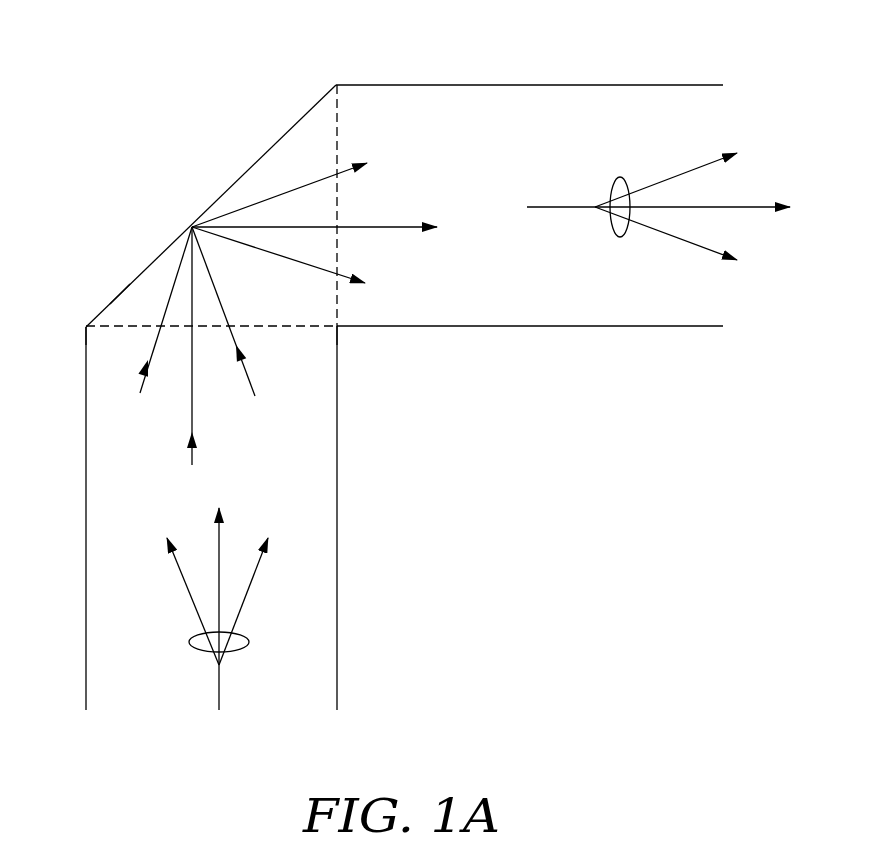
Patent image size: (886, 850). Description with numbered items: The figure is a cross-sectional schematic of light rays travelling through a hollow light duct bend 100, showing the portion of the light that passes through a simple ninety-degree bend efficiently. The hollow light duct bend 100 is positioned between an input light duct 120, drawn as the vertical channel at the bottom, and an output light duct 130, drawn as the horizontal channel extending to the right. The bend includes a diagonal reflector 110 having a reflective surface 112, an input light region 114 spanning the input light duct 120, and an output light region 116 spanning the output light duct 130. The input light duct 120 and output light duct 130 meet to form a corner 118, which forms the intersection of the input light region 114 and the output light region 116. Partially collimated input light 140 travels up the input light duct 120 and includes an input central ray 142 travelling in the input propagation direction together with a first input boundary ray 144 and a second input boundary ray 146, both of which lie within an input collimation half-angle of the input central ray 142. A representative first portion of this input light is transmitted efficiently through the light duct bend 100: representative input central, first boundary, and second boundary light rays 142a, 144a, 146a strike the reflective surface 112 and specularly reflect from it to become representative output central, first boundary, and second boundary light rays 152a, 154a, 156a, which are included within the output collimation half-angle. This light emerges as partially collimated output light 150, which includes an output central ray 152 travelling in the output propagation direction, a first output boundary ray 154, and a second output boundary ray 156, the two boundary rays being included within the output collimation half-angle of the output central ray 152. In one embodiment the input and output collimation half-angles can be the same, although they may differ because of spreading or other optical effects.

The hollow light duct bend 100 is at (135, 120).
The diagonal reflector 110 is at (285, 133).
The reflective surface 112 is at (122, 294).
The input light region 114 is at (107, 327).
The output light region 116 is at (337, 117).
The corner 118 is at (337, 327).
The input light duct 120 is at (86, 548).
The output light duct 130 is at (487, 85).
The partially collimated input light 140 is at (240, 650).
The input central ray 142 is at (220, 541).
The first input boundary ray 144 is at (178, 568).
The second input boundary ray 146 is at (258, 578).
The representative input central light ray 142a is at (192, 458).
The representative first boundary light ray 144a is at (250, 378).
The representative second boundary light ray 146a is at (140, 383).
The partially collimated output light 150 is at (612, 185).
The output central ray 152 is at (745, 206).
The first output boundary ray 154 is at (675, 240).
The second output boundary ray 156 is at (675, 172).
The representative output central light ray 152a is at (392, 226).
The representative output first boundary light ray 154a is at (297, 263).
The representative output second boundary light ray 156a is at (320, 178).